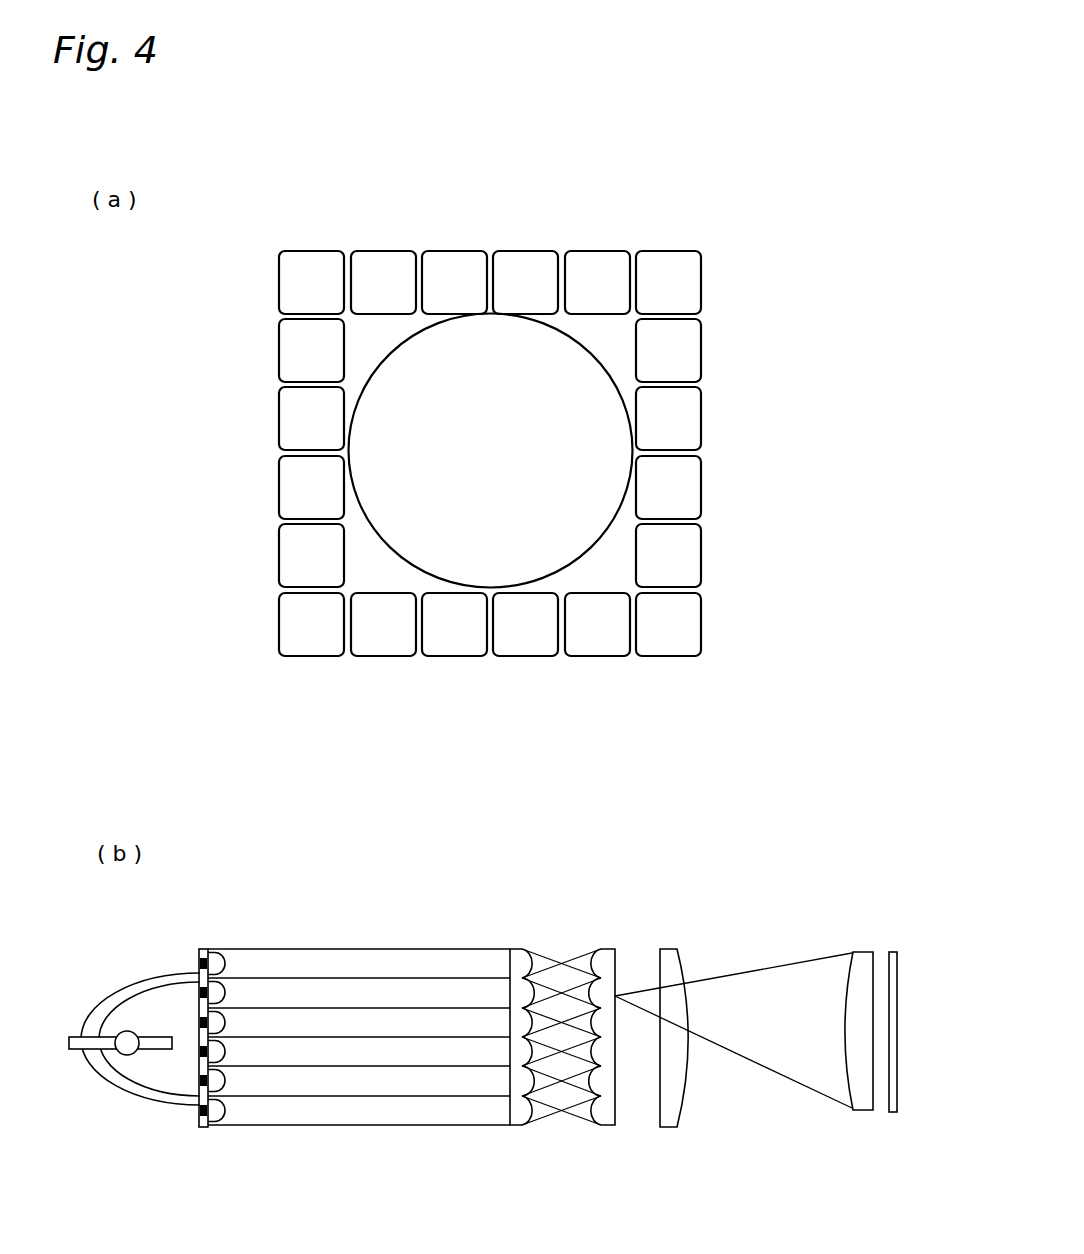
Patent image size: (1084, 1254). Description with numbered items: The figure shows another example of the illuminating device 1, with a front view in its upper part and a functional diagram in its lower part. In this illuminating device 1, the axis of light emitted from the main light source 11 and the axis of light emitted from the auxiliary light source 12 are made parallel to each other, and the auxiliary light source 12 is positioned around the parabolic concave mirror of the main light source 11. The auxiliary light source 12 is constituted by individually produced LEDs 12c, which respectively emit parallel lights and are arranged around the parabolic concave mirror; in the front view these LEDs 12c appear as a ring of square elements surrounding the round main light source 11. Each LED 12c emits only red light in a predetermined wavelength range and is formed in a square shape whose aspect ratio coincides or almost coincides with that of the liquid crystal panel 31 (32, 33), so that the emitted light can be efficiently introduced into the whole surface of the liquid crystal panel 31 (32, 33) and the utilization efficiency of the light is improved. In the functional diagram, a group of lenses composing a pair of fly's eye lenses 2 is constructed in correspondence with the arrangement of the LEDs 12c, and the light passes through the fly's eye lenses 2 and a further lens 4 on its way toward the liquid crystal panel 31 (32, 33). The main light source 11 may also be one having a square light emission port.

The illuminating device 1 is at (348, 920).
The fly's eye lenses 2 is at (615, 939).
The condenser lens 4 is at (669, 950).
The main light source 11 is at (368, 542).
The auxiliary light source 12 is at (303, 226).
The LED 12c is at (280, 281).
The liquid crystal panel 31 is at (892, 952).
The liquid crystal panel 32 is at (893, 1032).
The liquid crystal panel 33 is at (893, 1032).